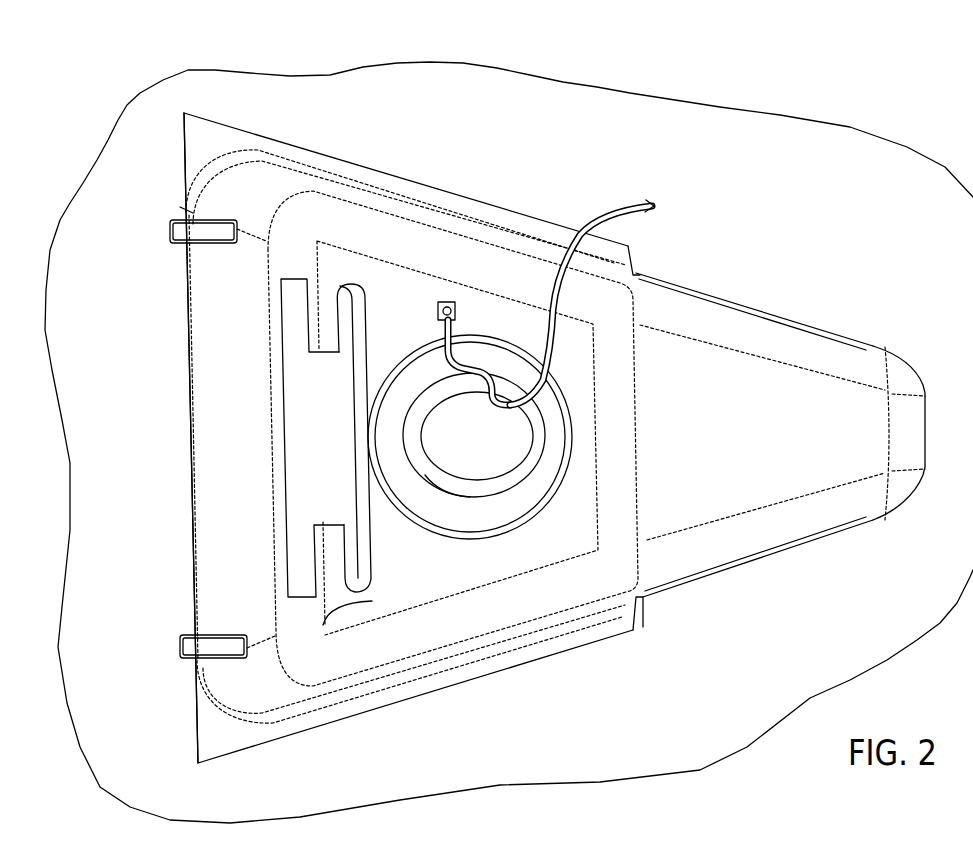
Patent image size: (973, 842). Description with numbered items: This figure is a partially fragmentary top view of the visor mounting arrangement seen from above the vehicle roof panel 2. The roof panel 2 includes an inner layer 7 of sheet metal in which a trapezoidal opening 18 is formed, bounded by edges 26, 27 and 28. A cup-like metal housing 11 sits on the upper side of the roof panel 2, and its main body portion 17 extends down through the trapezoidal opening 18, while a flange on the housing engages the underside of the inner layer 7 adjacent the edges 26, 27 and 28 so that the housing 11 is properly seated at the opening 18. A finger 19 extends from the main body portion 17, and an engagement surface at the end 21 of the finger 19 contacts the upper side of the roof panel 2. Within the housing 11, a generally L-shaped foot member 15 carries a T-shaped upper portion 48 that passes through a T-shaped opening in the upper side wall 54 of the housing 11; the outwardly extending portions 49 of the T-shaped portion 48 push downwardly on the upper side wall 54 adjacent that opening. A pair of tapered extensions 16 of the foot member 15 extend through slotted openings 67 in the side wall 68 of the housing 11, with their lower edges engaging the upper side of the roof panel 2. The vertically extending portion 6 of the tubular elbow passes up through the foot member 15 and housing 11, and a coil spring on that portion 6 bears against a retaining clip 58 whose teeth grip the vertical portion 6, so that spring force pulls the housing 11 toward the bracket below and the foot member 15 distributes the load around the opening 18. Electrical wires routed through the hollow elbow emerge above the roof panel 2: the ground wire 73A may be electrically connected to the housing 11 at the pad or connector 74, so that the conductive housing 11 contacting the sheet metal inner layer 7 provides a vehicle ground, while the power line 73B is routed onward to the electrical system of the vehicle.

The inner layer 7 is at (902, 197).
The trapezoidal opening 18 is at (276, 140).
The edge 26 is at (366, 170).
The edge 28 is at (410, 690).
The housing 11 is at (210, 473).
The edge 27 is at (190, 406).
The side wall 68 is at (213, 533).
The main body portion 17 is at (460, 262).
The foot member 15 is at (327, 413).
The T-shaped upper portion 48 is at (320, 490).
The outwardly extending portions 49 is at (358, 331).
The tapered extensions 16 is at (176, 244).
The slotted openings 67 is at (200, 214).
The upper side wall 54 is at (323, 625).
The retaining clip 58 is at (527, 497).
The vertically extending portion 6 is at (491, 451).
The pad or connector 74 is at (437, 311).
The ground wire 73A is at (506, 352).
The power line 73B is at (605, 214).
The vehicle roof panel 2 is at (677, 192).
The end 21 is at (813, 357).
The finger 19 is at (785, 535).